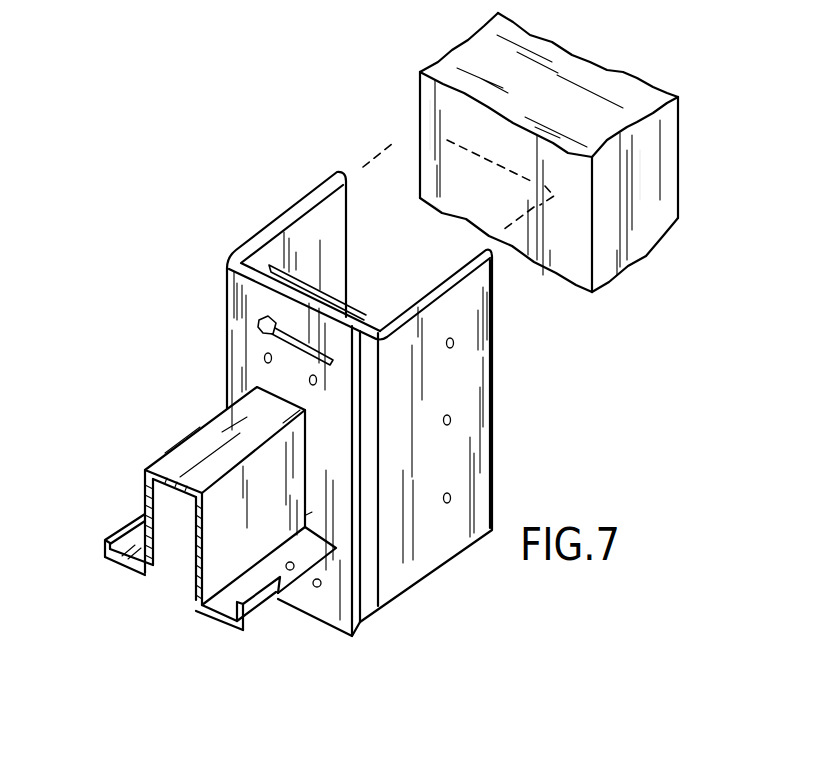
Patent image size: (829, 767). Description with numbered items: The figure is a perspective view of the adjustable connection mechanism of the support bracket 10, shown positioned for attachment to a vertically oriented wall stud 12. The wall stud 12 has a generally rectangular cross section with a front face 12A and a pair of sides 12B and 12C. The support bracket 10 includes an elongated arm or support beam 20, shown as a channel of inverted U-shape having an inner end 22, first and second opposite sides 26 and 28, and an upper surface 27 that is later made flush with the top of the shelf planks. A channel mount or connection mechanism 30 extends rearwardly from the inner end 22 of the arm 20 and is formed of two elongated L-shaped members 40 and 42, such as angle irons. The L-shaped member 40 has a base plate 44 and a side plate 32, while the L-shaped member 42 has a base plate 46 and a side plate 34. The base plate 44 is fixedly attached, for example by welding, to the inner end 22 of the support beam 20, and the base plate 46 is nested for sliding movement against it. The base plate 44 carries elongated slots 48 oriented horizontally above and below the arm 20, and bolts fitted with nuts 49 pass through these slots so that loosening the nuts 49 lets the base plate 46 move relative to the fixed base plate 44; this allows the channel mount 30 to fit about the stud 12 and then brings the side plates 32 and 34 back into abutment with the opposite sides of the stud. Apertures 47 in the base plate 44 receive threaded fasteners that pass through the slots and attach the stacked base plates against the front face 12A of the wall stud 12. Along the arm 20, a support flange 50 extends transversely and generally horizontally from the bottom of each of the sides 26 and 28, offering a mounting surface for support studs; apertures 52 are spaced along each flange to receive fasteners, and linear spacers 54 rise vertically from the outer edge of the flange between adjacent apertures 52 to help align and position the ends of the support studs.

The support bracket 10 is at (110, 292).
The wall stud 12 is at (414, 19).
The front face 12A is at (447, 132).
The side 12B is at (417, 90).
The side 12C is at (670, 167).
The elongated arm 20 is at (131, 422).
The inner end 22 is at (303, 513).
The first side 26 is at (143, 502).
The upper surface 27 is at (180, 458).
The second side 28 is at (222, 547).
The channel mount 30 is at (536, 420).
The side plate 32 is at (310, 192).
The side plate 34 is at (453, 342).
The L-shaped member 40 is at (252, 219).
The L-shaped member 42 is at (504, 467).
The base plate 44 is at (352, 630).
The base plate 46 is at (358, 308).
The apertures 47 is at (312, 382).
The elongated slots 48 is at (303, 348).
The nut 49 is at (257, 324).
The support flange 50 is at (127, 567).
The apertures 52 is at (291, 571).
The linear spacers 54 is at (105, 550).